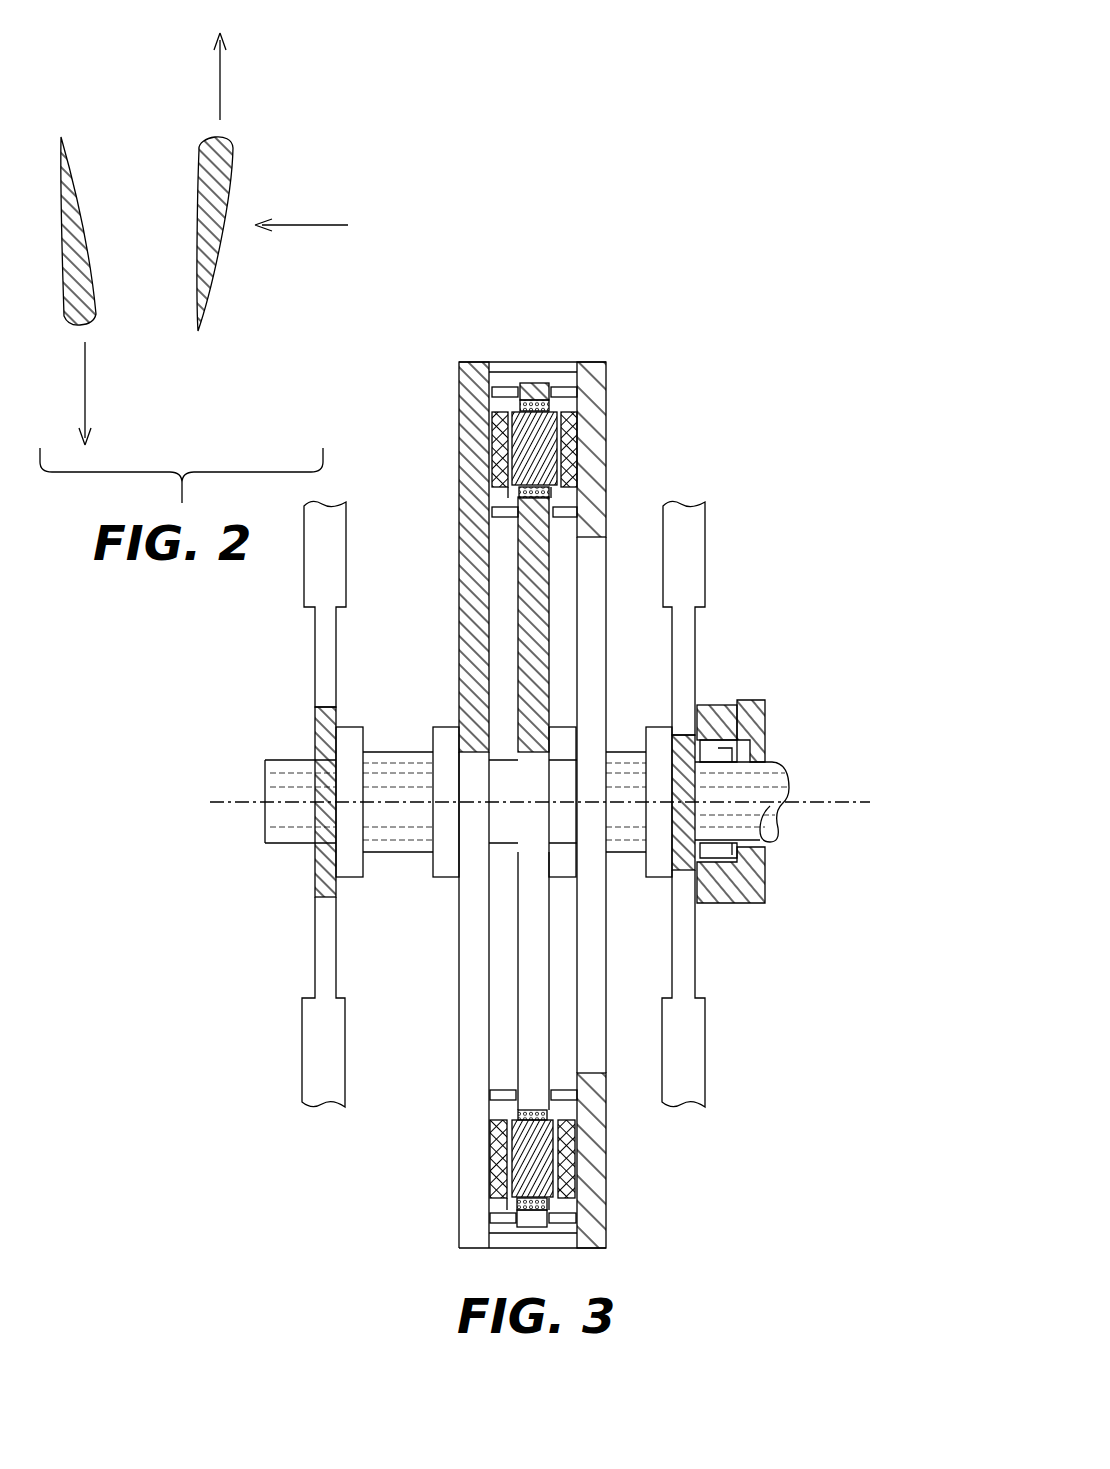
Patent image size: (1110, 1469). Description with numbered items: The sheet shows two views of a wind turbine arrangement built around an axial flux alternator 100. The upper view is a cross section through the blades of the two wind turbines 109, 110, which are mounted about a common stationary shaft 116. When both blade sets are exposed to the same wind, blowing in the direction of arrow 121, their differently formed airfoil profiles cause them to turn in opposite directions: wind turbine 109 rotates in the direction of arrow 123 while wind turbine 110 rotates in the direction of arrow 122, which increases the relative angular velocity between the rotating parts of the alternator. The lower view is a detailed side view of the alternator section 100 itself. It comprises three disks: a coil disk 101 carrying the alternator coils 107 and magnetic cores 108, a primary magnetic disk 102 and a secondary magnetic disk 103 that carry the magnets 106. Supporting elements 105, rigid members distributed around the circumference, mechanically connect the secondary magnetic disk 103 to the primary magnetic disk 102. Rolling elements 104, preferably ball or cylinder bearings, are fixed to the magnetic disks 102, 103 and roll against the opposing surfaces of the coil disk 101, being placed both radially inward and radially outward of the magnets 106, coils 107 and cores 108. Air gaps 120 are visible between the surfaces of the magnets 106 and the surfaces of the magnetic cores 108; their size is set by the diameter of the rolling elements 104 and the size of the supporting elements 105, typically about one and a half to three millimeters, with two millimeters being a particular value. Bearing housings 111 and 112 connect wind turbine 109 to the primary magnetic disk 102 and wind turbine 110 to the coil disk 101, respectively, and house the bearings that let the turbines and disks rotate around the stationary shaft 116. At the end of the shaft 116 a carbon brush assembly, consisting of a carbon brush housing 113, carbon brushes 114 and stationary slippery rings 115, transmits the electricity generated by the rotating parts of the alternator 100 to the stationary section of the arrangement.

In FIG. 3, the axial flux alternator 100 is at (438, 1248).
In FIG. 3, the coil disk 101 is at (518, 615).
In FIG. 3, the primary magnetic disk 102 is at (460, 455).
In FIG. 3, the secondary magnetic disk 103 is at (607, 385).
In FIG. 3, the rolling elements 104 is at (505, 382).
In FIG. 3, the supporting elements 105 is at (556, 1250).
In FIG. 3, the magnets 106 is at (569, 410).
In FIG. 3, the alternator coils 107 is at (520, 407).
In FIG. 3, the magnetic cores 108 is at (520, 488).
In FIG. 2, the wind turbine 109 is at (66, 160).
In FIG. 2, the wind turbine 110 is at (207, 270).
In FIG. 3, the bearing housing 111 is at (390, 752).
In FIG. 3, the bearing housing 112 is at (622, 752).
In FIG. 3, the carbon brush housing 113 is at (705, 705).
In FIG. 3, the carbon brushes 114 is at (750, 700).
In FIG. 3, the stationary slippery rings 115 is at (755, 853).
In FIG. 3, the stationary shaft 116 is at (778, 762).
In FIG. 3, the air gaps 120 is at (558, 500).
In FIG. 2, the arrow 121 is at (305, 225).
In FIG. 2, the arrow 122 is at (220, 105).
In FIG. 2, the arrow 123 is at (86, 410).